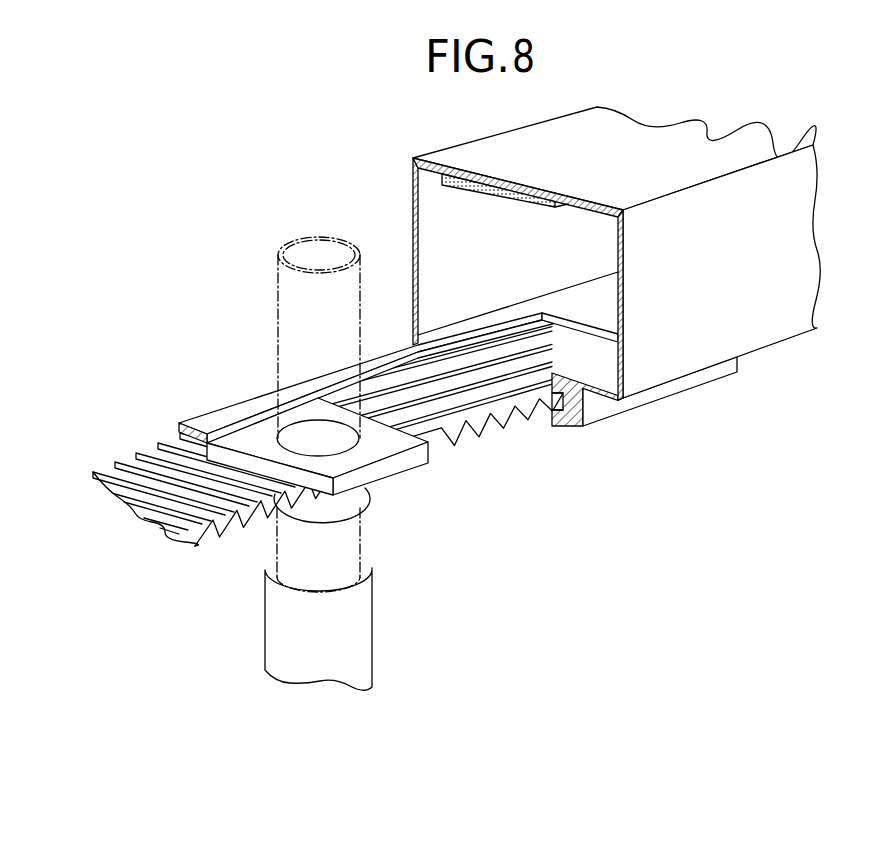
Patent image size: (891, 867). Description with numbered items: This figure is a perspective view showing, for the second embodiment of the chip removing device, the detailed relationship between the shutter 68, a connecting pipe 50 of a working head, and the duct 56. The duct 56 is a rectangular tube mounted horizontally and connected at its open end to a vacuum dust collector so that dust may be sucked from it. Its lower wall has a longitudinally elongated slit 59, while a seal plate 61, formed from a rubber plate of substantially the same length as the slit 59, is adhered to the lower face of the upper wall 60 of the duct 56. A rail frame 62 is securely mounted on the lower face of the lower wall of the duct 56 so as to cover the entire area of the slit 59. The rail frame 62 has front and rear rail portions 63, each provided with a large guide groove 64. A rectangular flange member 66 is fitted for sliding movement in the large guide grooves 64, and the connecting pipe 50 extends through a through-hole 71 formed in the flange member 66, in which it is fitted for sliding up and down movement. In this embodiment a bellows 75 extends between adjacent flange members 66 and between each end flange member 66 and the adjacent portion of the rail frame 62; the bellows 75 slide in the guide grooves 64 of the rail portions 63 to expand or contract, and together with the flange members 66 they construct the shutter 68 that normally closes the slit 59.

The connecting pipe 50 is at (277, 310).
The duct 56 is at (797, 260).
The slit 59 is at (480, 333).
The upper wall 60 is at (707, 140).
The seal plate 61 is at (483, 196).
The rail frame 62 is at (737, 360).
The rail portion 63 is at (202, 421).
The large guide groove 64 is at (555, 418).
The flange member 66 is at (403, 460).
The shutter 68 is at (128, 508).
The through-hole 71 is at (313, 427).
The bellows 75 is at (468, 405).